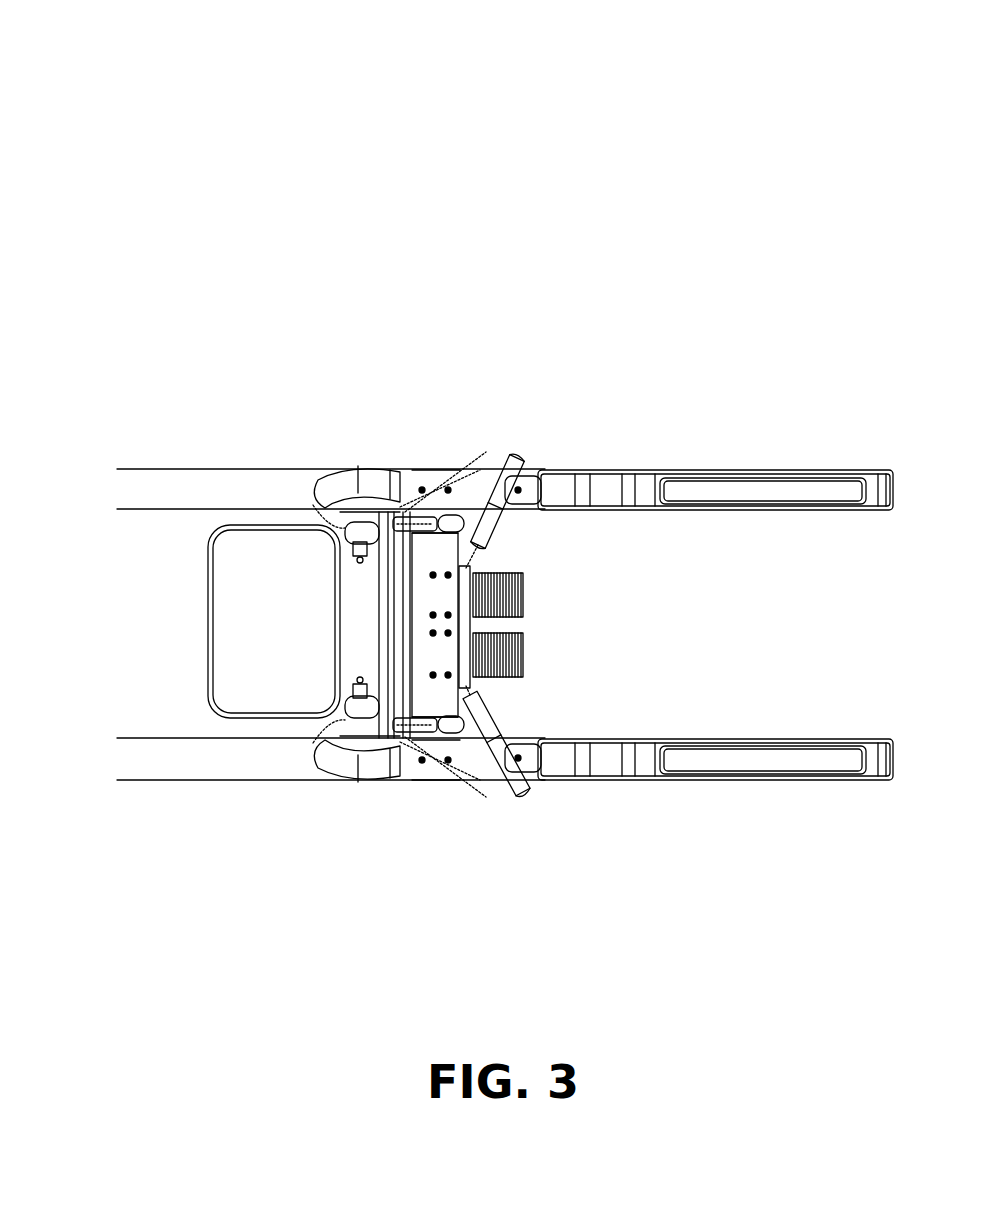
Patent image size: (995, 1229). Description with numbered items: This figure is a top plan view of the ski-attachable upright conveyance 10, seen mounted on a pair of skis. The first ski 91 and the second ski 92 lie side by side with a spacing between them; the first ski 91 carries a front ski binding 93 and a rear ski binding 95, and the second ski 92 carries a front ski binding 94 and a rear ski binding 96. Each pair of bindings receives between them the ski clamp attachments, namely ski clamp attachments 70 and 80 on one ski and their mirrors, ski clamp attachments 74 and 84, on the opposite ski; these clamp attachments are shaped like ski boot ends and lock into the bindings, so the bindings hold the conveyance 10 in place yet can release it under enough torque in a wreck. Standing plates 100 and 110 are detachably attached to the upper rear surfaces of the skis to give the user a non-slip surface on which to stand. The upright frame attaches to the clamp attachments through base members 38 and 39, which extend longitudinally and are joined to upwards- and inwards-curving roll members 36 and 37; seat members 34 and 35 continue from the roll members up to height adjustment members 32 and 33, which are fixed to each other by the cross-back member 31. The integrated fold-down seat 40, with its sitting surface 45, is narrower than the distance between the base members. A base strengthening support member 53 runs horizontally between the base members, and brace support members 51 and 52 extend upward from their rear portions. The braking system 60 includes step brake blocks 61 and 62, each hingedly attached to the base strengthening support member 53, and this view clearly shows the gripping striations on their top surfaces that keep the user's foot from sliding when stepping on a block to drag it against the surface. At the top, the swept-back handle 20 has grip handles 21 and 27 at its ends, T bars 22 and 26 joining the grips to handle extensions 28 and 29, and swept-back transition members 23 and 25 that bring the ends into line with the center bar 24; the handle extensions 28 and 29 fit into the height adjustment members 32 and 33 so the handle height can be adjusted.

The ski-attachable upright conveyance 10 is at (786, 112).
The swept-back handle 20 is at (350, 639).
The grip handle 21 is at (510, 790).
The T bar 22 is at (548, 776).
The swept-back transition member 23 is at (470, 693).
The center bar 24 is at (458, 603).
The swept-back transition member 25 is at (470, 558).
The T bar 26 is at (483, 537).
The grip handle 27 is at (517, 453).
The handle extension 28 is at (460, 730).
The handle extension 29 is at (540, 447).
The cross-back member 31 is at (380, 632).
The height adjustment member 32 is at (418, 717).
The height adjustment member 33 is at (417, 515).
The seat member 34 is at (322, 694).
The seat member 35 is at (308, 538).
The roll member 36 is at (330, 778).
The roll member 37 is at (290, 494).
The base member 38 is at (523, 752).
The base member 39 is at (522, 498).
The integrated fold-down seat 40 is at (220, 621).
The sitting surface 45 is at (207, 658).
The brace support member 51 is at (443, 748).
The brace support member 52 is at (447, 503).
The base strengthening support member 53 is at (417, 667).
The braking system 60 is at (645, 627).
The step brake block 61 is at (522, 658).
The step brake block 62 is at (518, 592).
The ski clamp attachment 70 is at (410, 783).
The ski clamp attachment 74 is at (428, 458).
The ski clamp attachment 80 is at (609, 819).
The ski clamp attachment 84 is at (612, 436).
The first ski 91 is at (193, 778).
The second ski 92 is at (158, 498).
The front ski binding 93 is at (308, 818).
The front ski binding 94 is at (269, 457).
The rear ski binding 95 is at (605, 767).
The rear ski binding 96 is at (604, 490).
The standing plate 100 is at (715, 776).
The standing plate 110 is at (715, 447).